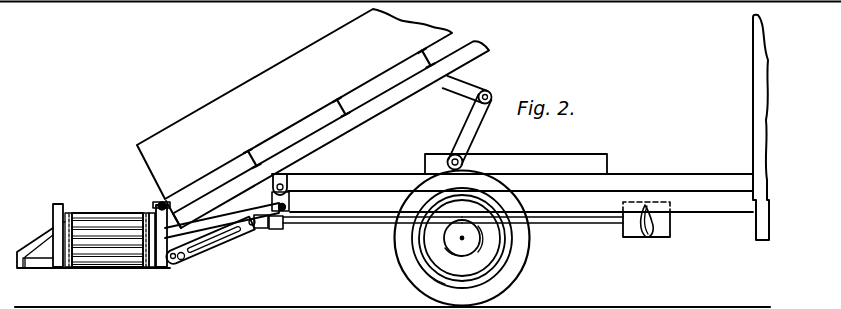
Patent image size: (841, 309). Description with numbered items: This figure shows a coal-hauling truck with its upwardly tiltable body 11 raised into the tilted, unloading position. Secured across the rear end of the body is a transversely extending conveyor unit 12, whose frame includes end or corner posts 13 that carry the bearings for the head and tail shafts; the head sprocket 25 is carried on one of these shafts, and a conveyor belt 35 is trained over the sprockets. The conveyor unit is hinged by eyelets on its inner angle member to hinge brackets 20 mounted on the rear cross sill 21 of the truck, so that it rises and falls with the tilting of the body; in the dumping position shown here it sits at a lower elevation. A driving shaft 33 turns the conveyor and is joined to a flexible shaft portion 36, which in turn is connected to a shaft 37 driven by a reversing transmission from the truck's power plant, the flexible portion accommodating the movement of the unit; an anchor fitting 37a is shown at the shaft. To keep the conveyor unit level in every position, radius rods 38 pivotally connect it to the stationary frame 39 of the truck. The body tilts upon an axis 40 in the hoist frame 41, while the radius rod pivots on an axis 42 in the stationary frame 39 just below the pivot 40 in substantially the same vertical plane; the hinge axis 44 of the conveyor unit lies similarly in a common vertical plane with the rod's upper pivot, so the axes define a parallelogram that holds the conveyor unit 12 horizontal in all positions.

The upwardly tiltable body 11 is at (278, 75).
The conveyor unit 12 is at (88, 212).
The end or corner posts 13 is at (157, 268).
The hinge brackets 20 is at (164, 202).
The rear cross sill 21 is at (247, 157).
The head sprocket 25 is at (60, 205).
The driving shaft 33 is at (176, 262).
The conveyor belt 35 is at (140, 269).
The flexible shaft portion 36 is at (216, 250).
The shaft 37 is at (574, 221).
The cable anchor bracket 37a is at (643, 237).
The radius rods 38 is at (233, 217).
The stationary frame 39 is at (344, 210).
The tilting axis 40 is at (303, 168).
The hoist frame 41 is at (645, 182).
The radius rod pivot axis 42 is at (283, 229).
The hinge axis 44 is at (157, 206).